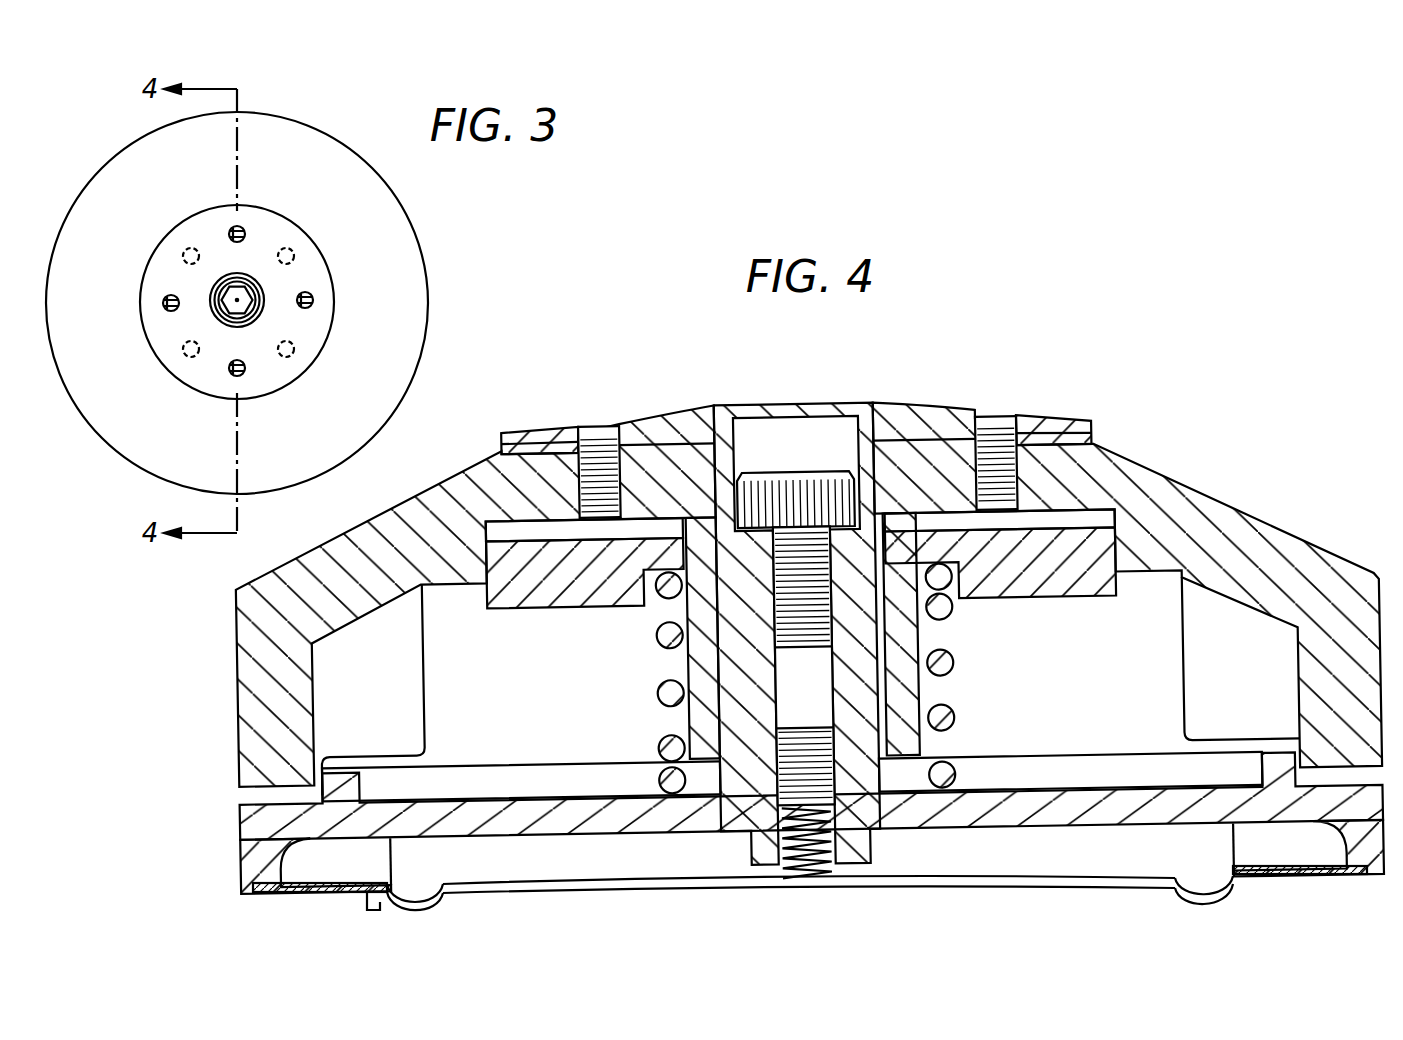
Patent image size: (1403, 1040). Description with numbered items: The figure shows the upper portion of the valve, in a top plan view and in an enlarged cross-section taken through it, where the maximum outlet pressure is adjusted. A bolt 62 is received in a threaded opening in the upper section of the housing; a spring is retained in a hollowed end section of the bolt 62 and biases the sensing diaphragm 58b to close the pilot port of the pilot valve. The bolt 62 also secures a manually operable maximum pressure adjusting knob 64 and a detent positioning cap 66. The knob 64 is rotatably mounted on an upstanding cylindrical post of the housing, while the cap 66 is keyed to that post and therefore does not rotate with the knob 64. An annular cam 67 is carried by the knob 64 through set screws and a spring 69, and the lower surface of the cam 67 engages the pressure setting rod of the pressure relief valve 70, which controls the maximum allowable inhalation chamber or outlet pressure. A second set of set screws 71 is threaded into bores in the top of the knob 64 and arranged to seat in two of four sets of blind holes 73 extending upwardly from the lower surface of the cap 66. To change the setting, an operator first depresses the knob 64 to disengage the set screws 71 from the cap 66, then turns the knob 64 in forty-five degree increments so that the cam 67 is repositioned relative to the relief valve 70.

In FIG. 4, the sensing diaphragm 58b is at (740, 893).
In FIG. 3, the bolt 62 is at (224, 308).
In FIG. 4, the bolt 62 is at (803, 468).
In FIG. 3, the maximum pressure adjusting knob 64 is at (125, 457).
In FIG. 4, the maximum pressure adjusting knob 64 is at (1227, 512).
In FIG. 3, the detent positioning cap 66 is at (197, 215).
In FIG. 4, the detent positioning cap 66 is at (955, 407).
In FIG. 4, the annular cam 67 is at (1062, 552).
In FIG. 4, the spring 69 is at (955, 664).
In FIG. 3, the pressure relief valve 70 is at (317, 298).
In FIG. 3, the set screws 71 is at (245, 227).
In FIG. 4, the set screws 71 is at (600, 422).
In FIG. 3, the blind holes 73 is at (294, 248).